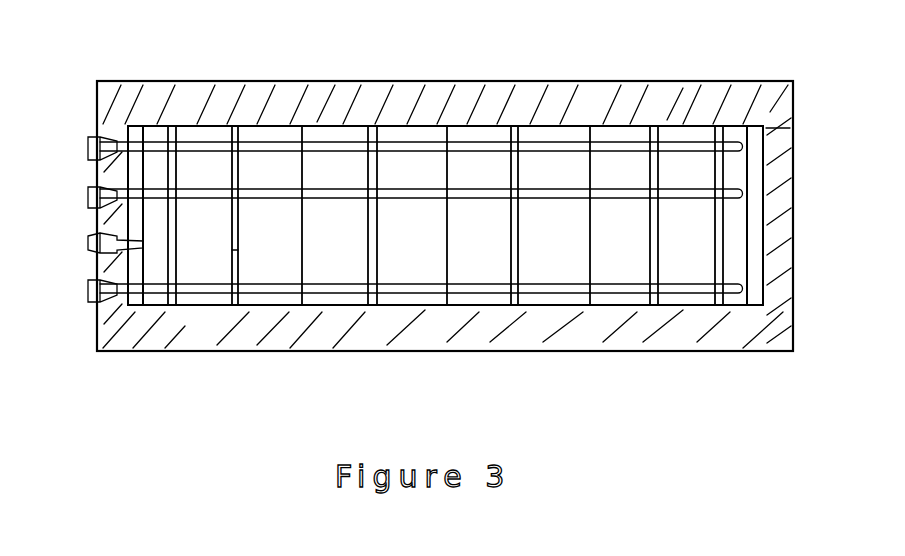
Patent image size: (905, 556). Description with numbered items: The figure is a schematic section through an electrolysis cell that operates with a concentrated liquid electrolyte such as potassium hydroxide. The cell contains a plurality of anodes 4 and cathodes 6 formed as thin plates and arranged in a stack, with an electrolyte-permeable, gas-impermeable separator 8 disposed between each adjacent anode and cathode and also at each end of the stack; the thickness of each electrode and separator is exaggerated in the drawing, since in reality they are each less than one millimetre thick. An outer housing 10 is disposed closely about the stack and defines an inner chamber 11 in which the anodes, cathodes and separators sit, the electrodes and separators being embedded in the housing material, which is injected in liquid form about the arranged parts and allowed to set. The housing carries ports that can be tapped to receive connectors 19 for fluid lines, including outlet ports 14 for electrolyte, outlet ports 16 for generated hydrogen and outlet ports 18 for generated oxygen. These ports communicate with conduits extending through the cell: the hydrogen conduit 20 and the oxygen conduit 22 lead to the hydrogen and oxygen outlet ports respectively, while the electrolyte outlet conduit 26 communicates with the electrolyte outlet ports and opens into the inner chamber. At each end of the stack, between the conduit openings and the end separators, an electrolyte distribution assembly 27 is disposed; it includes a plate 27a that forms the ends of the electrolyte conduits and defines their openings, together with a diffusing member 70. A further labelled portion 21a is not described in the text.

The anodes 4 is at (257, 272).
The cathodes 6 is at (182, 313).
The separator 8 is at (235, 133).
The outer housing 10 is at (232, 323).
The inner chamber 11 is at (552, 148).
The outlet ports for electrolyte 14 is at (90, 237).
The outlet ports for generated hydrogen 16 is at (92, 300).
The outlet ports for generated oxygen 18 is at (88, 140).
The connectors 19 is at (90, 137).
The hydrogen conduit 20 is at (693, 270).
The inner wall portion 21a is at (133, 137).
The oxygen conduit 22 is at (280, 137).
The electrolyte outlet conduit 26 is at (88, 252).
The electrolyte distribution assembly 27 is at (737, 127).
The plate 27a is at (757, 243).
The diffusing member 70 is at (157, 137).